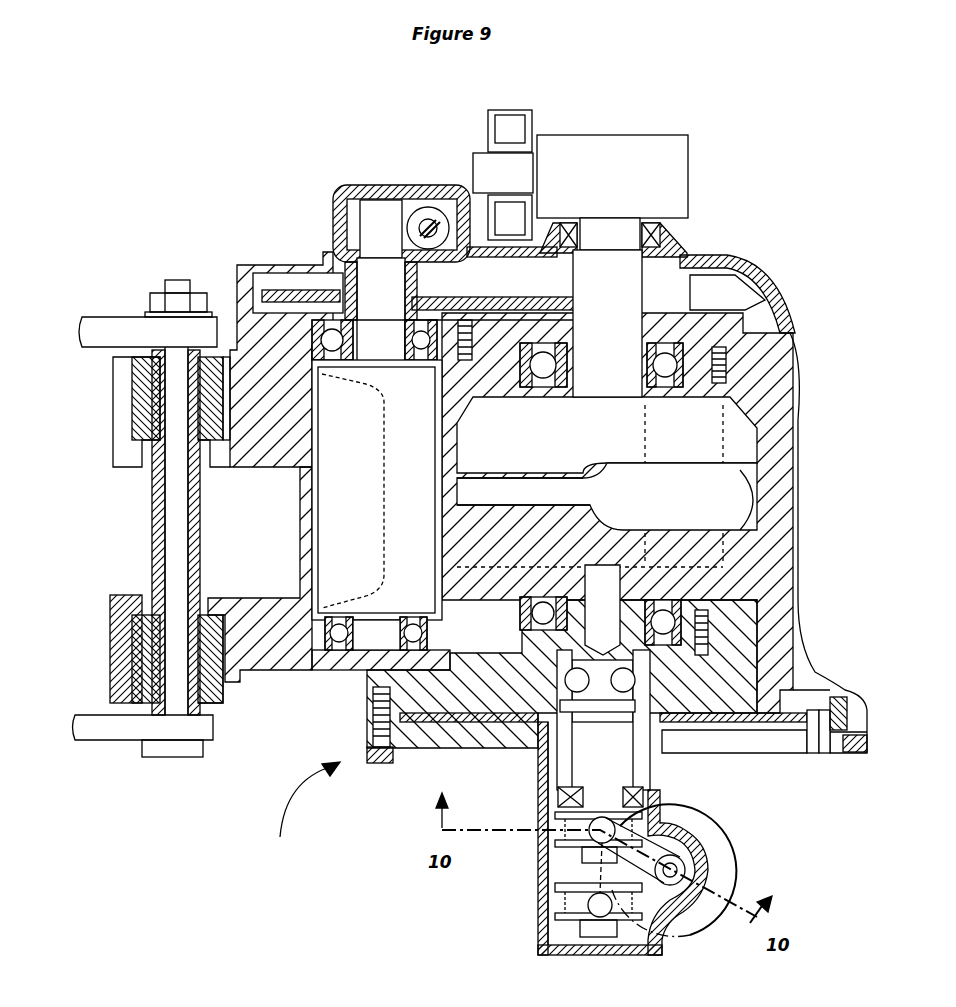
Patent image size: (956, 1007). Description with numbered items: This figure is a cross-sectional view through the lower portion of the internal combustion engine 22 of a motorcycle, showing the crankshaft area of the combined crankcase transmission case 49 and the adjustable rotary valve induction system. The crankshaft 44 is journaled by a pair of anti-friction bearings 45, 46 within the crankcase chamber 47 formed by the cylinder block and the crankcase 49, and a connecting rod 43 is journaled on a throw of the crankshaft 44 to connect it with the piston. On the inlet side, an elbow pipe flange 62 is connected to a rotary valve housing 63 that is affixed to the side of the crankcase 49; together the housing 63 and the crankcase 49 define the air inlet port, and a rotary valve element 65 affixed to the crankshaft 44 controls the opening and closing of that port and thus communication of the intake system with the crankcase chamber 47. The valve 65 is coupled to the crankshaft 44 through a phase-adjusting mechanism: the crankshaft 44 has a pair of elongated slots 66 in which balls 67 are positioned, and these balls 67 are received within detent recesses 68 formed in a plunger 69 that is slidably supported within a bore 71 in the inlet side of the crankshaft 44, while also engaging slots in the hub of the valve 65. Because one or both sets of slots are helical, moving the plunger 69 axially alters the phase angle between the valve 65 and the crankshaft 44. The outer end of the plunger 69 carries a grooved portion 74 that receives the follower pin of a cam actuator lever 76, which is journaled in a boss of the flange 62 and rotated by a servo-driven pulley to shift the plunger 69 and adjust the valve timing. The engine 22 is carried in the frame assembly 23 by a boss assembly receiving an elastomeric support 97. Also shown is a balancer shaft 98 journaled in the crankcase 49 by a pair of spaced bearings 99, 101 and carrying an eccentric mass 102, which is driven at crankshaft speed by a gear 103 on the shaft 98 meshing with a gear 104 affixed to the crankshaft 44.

The internal combustion engine 22 is at (299, 814).
The frame assembly 23 is at (100, 717).
The connecting rod 43 is at (743, 507).
The crankshaft 44 is at (740, 443).
The anti-friction bearing 45 is at (710, 613).
The anti-friction bearing 46 is at (740, 333).
The crankcase chamber 47 is at (500, 504).
The combined crankcase transmission case 49 is at (462, 748).
The flange 62 is at (813, 753).
The rotary valve housing 63 is at (830, 747).
The rotary valve element 65 is at (707, 737).
The elongated slots 66 is at (602, 655).
The balls 67 is at (585, 722).
The detent recesses 68 is at (565, 680).
The plunger 69 is at (590, 700).
The bore 71 is at (560, 793).
The grooved portion 74 is at (548, 832).
The cam actuator lever 76 is at (688, 808).
The elastomeric support 97 is at (147, 703).
The balancer shaft 98 is at (377, 268).
The bearing 99 is at (340, 343).
The bearing 101 is at (320, 640).
The eccentric mass 102 is at (337, 530).
The gear 103 is at (430, 305).
The gear 104 is at (515, 300).